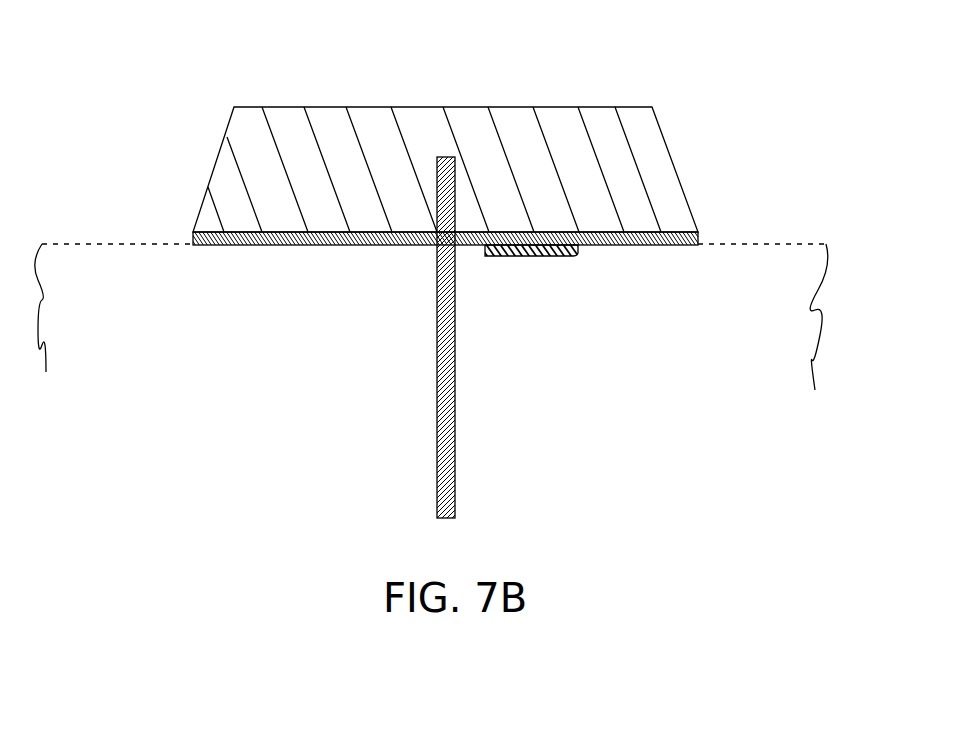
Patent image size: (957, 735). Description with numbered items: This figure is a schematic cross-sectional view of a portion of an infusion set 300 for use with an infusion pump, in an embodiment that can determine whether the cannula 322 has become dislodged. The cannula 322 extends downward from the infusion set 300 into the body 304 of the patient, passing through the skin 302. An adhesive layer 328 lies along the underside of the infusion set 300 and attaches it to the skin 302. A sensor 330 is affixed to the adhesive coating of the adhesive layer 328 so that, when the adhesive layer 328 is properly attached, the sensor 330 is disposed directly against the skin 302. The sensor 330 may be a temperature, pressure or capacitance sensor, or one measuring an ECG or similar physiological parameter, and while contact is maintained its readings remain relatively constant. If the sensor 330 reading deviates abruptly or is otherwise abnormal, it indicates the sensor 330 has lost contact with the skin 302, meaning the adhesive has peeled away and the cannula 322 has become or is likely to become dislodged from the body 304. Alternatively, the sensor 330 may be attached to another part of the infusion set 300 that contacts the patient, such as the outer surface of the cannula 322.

The infusion set 300 is at (662, 72).
The skin 302 is at (776, 243).
The body 304 is at (785, 330).
The cannula 322 is at (437, 352).
The adhesive layer 328 is at (700, 237).
The sensor 330 is at (575, 257).